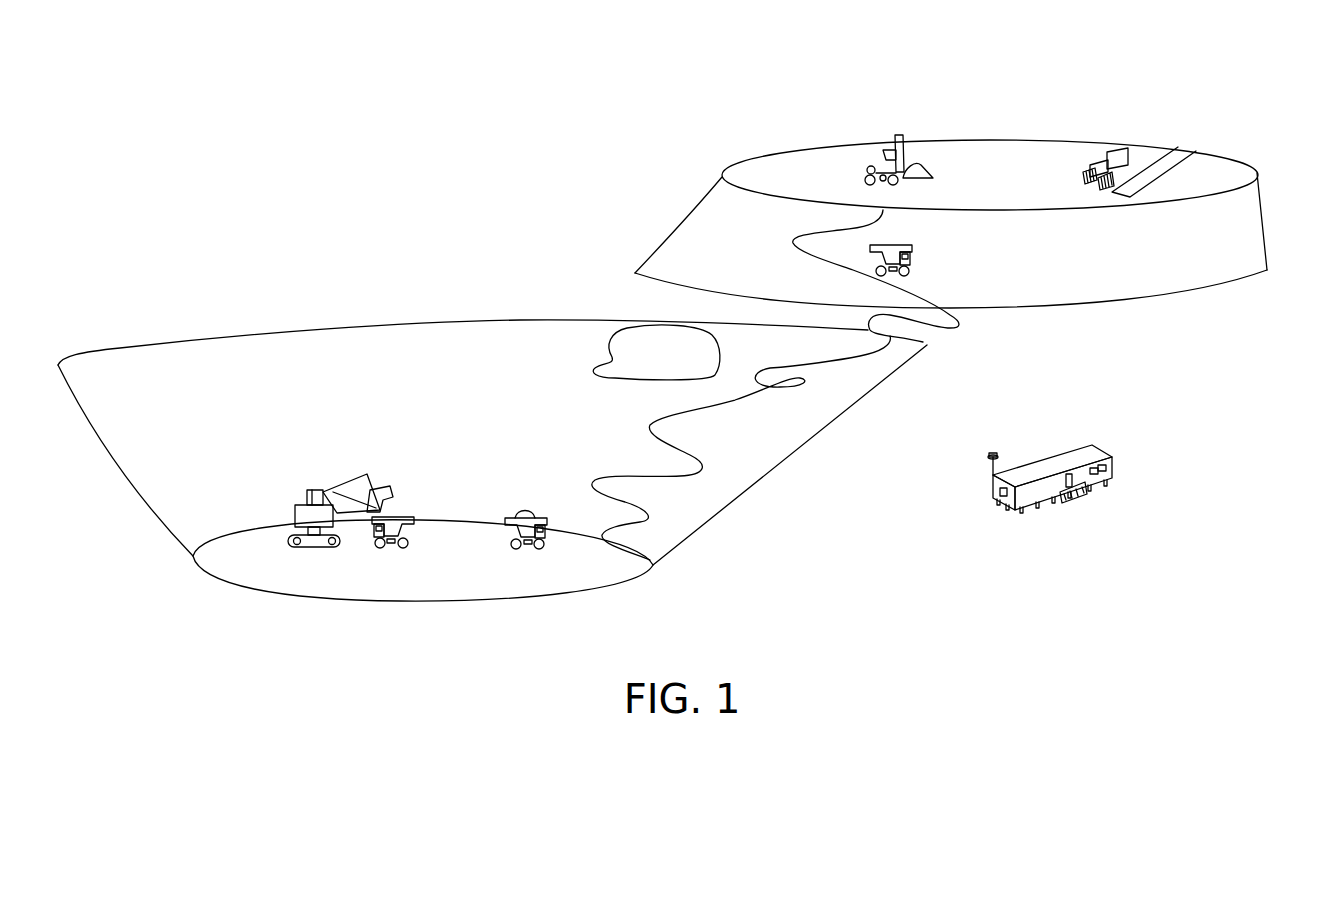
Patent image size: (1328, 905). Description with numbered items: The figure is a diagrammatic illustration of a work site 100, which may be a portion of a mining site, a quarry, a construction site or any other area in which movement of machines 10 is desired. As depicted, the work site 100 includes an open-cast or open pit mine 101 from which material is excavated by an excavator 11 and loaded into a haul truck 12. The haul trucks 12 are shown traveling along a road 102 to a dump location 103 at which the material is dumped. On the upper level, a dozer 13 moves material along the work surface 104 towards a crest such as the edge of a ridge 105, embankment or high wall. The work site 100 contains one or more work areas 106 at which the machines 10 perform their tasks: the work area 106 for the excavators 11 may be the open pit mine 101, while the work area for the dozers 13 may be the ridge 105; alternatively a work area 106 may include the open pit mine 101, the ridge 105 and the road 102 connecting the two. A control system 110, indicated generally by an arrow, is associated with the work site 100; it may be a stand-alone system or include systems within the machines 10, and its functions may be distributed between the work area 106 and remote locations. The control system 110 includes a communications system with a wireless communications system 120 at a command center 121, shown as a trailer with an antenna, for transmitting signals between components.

The work site 100 is at (240, 163).
The open pit mine 101 is at (362, 317).
The road 102 is at (720, 402).
The dump location 103 is at (1183, 140).
The work surface 104 is at (1008, 193).
The ridge 105 is at (1213, 167).
The work area 106 is at (453, 252).
The machine 10 is at (270, 453).
The excavator 11 is at (306, 512).
The haul truck 12 is at (510, 517).
The dozer 13 is at (1100, 165).
The control system 110 is at (1120, 528).
The wireless communications system 120 is at (1147, 432).
The command center 121 is at (1060, 460).